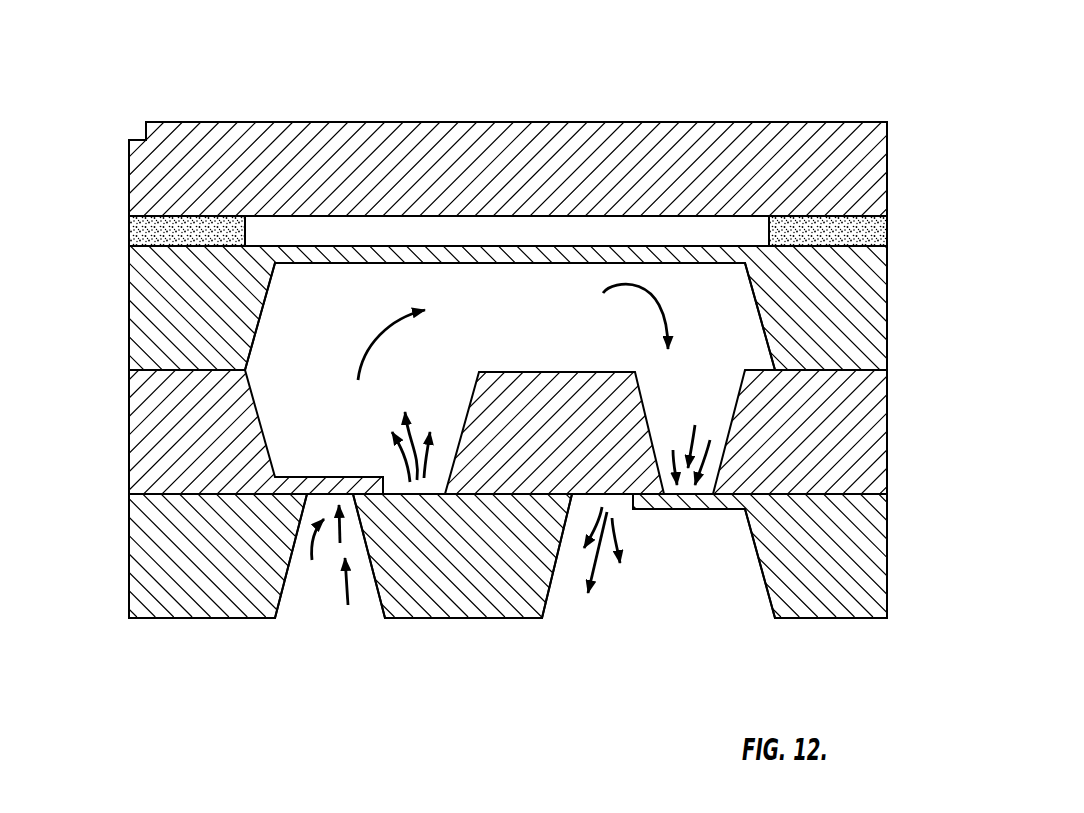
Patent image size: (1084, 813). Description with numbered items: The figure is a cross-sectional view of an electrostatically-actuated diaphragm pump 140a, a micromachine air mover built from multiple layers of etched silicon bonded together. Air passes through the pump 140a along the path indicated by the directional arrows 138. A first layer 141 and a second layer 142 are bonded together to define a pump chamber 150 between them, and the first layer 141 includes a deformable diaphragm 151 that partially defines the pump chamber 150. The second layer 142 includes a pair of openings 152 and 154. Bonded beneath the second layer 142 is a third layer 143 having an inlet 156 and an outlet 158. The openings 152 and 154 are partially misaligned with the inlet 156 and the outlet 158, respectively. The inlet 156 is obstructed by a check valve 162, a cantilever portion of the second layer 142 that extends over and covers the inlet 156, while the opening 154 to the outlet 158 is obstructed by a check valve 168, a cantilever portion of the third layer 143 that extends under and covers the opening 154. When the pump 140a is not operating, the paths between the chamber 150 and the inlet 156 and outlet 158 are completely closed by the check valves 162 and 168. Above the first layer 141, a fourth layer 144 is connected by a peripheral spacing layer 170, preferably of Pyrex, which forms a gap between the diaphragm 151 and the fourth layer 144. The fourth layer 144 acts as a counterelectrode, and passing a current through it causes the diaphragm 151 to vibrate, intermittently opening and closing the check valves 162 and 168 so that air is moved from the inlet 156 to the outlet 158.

The electrostatically-actuated diaphragm pump 140a is at (445, 60).
The deformable diaphragm 151 is at (383, 244).
The fourth layer 144 is at (690, 140).
The peripheral spacing layer 170 is at (833, 229).
The first layer 141 is at (862, 314).
The pump chamber 150 is at (558, 336).
The second layer 142 is at (157, 425).
The check valve 162 is at (328, 487).
The opening 152 is at (447, 418).
The opening 154 is at (718, 405).
The third layer 143 is at (490, 592).
The check valve 168 is at (752, 540).
The inlet 156 is at (305, 621).
The outlet 158 is at (640, 603).
The directional arrows 138 is at (383, 332).